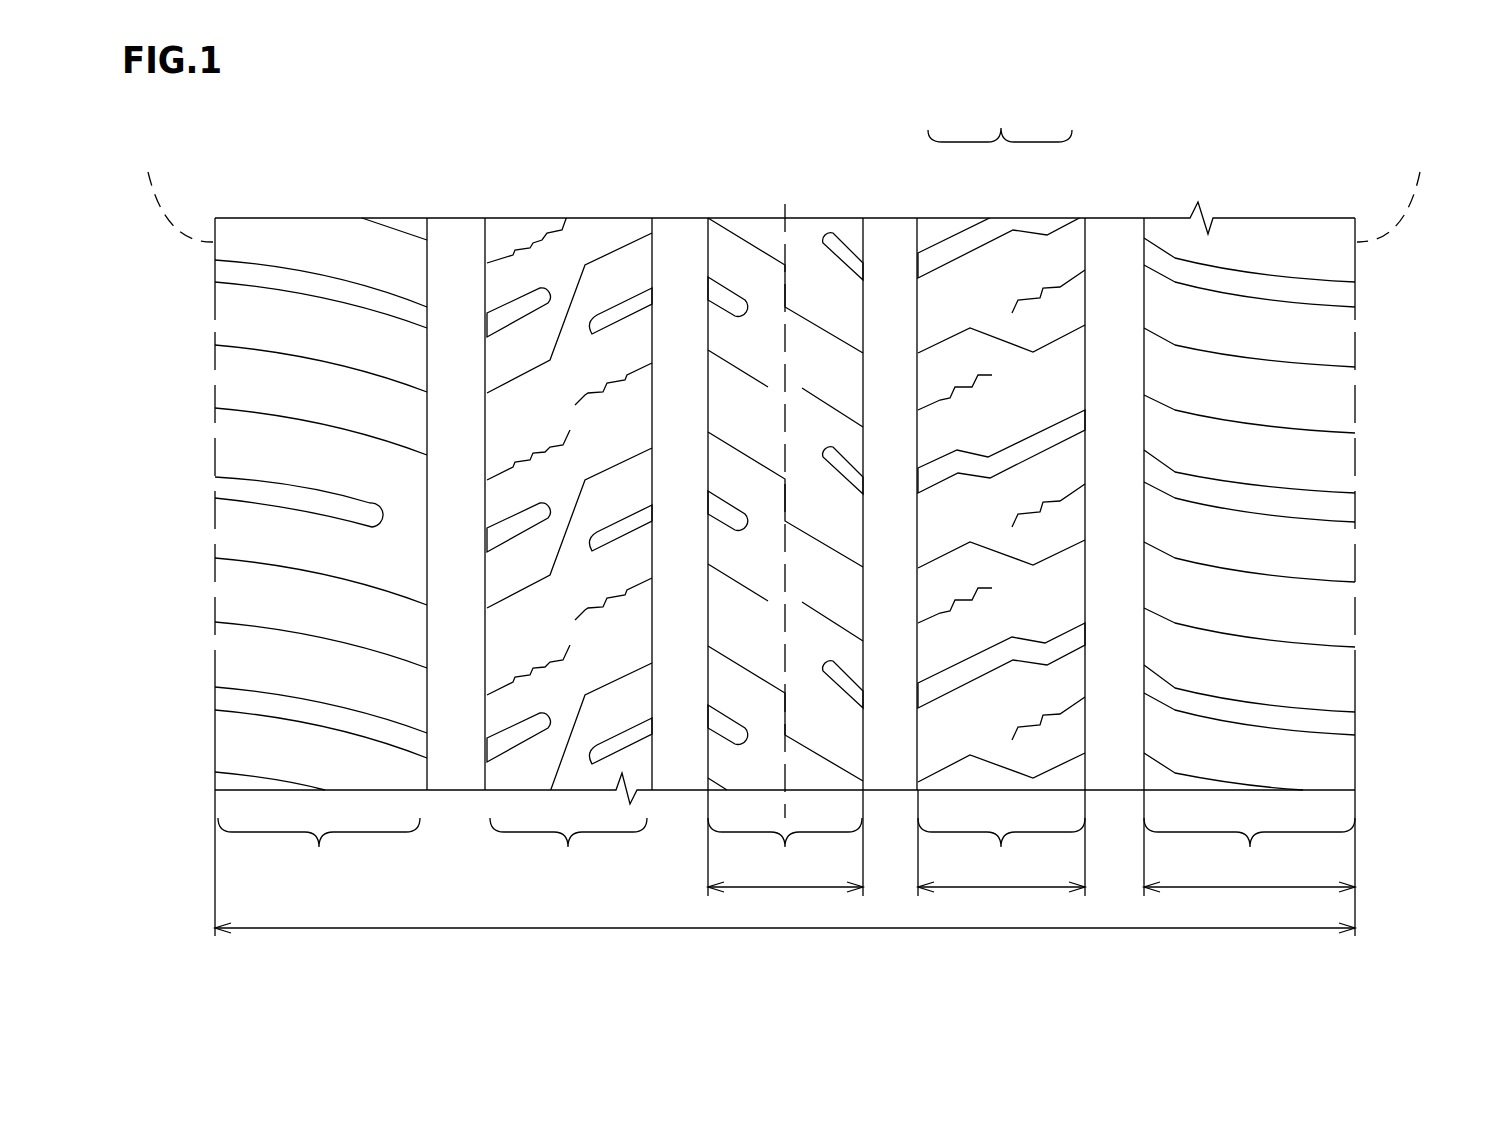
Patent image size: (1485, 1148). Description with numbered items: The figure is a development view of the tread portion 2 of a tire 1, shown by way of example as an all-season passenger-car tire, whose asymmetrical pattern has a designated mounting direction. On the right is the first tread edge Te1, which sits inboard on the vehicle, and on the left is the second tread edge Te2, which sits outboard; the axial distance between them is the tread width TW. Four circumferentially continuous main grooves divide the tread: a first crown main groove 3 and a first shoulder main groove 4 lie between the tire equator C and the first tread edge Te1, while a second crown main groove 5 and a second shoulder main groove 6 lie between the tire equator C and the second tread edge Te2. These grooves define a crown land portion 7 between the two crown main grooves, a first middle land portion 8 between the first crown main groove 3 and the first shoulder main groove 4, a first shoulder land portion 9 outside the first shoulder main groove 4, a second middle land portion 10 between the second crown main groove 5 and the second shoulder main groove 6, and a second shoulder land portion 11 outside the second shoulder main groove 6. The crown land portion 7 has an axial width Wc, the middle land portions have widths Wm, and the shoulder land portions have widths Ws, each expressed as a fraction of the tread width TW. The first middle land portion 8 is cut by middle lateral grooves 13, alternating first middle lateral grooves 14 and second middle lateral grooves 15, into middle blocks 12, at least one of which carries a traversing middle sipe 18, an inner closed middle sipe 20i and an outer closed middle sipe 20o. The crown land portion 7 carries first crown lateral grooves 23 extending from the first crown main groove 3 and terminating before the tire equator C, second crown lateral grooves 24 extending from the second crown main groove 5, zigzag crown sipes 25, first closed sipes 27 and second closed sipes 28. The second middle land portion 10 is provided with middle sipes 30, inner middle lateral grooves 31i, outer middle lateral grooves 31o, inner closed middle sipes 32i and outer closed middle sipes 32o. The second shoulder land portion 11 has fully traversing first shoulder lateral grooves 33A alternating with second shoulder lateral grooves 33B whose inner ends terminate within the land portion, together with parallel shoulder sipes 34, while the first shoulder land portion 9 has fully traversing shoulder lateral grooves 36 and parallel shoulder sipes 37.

The tire 1 is at (1284, 157).
The tread portion 2 is at (785, 218).
The first tread edge Te1 is at (1400, 190).
The second tread edge Te2 is at (168, 190).
The first crown main groove 3 is at (892, 264).
The first shoulder main groove 4 is at (1119, 264).
The second crown main groove 5 is at (679, 264).
The second shoulder main groove 6 is at (456, 264).
The tire equator C is at (781, 496).
The crown land portion 7 is at (785, 550).
The first middle land portion 8 is at (1001, 628).
The first shoulder land portion 9 is at (1249, 605).
The second middle land portion 10 is at (569, 551).
The second shoulder land portion 11 is at (321, 552).
The middle block 12 is at (977, 305).
The middle lateral grooves 13 is at (1000, 118).
The first middle lateral groove 14 is at (957, 247).
The second middle lateral groove 15 is at (1040, 447).
The middle sipe 18 is at (943, 556).
The outer closed middle sipe 20o is at (1060, 496).
The inner closed middle sipe 20i is at (950, 613).
The first crown lateral groove 23 is at (830, 466).
The second crown lateral groove 24 is at (740, 523).
The zigzag crown sipe 25 is at (813, 543).
The first closed sipe 27 is at (823, 400).
The second closed sipe 28 is at (736, 372).
The middle sipe 30 is at (522, 590).
The outer middle lateral groove 31o is at (548, 516).
The inner middle lateral groove 31i is at (590, 551).
The outer closed middle sipe 32o is at (534, 458).
The inner closed middle sipe 32i is at (612, 384).
The first shoulder lateral groove 33A is at (274, 283).
The second shoulder lateral groove 33B is at (272, 489).
The shoulder sipe 34 is at (295, 569).
The shoulder lateral groove 36 is at (1267, 285).
The shoulder sipe 37 is at (1267, 425).
The width of the crown land portion Wc is at (785, 856).
The width of the middle land portions Wm is at (1001, 856).
The width of the shoulder land portions Ws is at (1249, 856).
The tread width TW is at (785, 943).